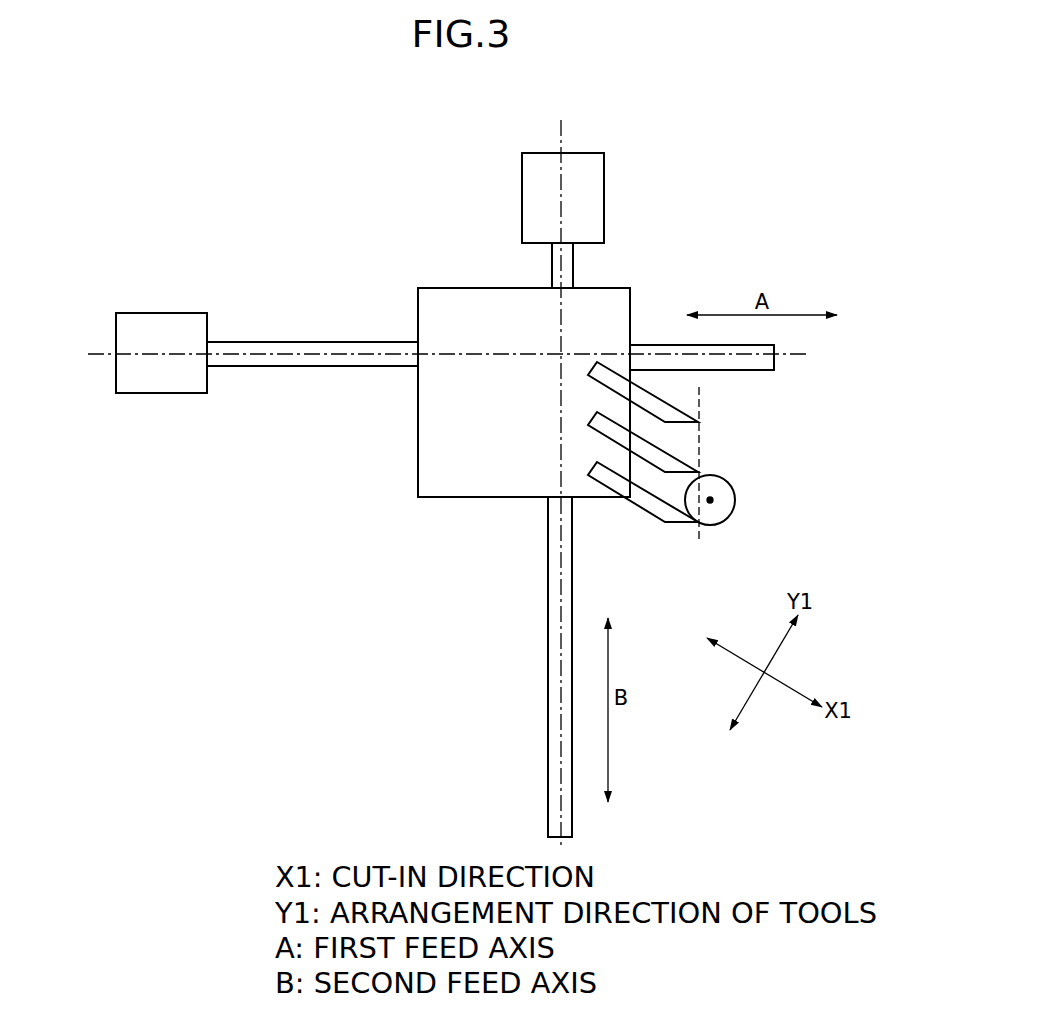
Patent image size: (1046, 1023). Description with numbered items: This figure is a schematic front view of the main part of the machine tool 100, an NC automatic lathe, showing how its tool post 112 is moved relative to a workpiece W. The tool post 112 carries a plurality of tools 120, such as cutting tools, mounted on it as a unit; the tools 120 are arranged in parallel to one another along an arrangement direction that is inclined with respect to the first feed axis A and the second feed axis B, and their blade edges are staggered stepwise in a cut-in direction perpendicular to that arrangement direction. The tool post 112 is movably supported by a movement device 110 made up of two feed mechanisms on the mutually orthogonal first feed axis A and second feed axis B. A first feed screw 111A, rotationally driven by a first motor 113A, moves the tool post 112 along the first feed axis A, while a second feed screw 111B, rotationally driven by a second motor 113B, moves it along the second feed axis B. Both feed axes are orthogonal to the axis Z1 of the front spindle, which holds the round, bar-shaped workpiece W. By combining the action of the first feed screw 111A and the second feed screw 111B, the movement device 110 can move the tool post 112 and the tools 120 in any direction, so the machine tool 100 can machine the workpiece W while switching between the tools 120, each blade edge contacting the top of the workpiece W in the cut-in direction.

The machine tool 100 is at (760, 193).
The movement device 110 is at (510, 164).
The first feed screw 111A is at (283, 352).
The second feed screw 111B is at (555, 267).
The tool post 112 is at (433, 300).
The first motor 113A is at (155, 322).
The second motor 113B is at (595, 197).
The tools 120 is at (670, 465).
The workpiece W is at (730, 520).
The axis of the front spindle Z1 is at (712, 500).